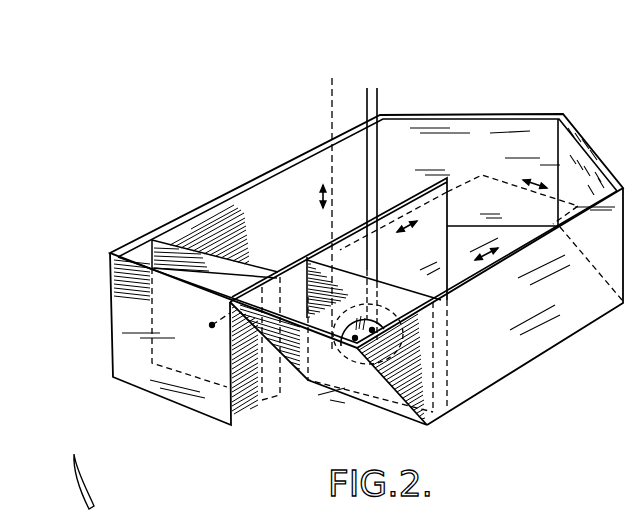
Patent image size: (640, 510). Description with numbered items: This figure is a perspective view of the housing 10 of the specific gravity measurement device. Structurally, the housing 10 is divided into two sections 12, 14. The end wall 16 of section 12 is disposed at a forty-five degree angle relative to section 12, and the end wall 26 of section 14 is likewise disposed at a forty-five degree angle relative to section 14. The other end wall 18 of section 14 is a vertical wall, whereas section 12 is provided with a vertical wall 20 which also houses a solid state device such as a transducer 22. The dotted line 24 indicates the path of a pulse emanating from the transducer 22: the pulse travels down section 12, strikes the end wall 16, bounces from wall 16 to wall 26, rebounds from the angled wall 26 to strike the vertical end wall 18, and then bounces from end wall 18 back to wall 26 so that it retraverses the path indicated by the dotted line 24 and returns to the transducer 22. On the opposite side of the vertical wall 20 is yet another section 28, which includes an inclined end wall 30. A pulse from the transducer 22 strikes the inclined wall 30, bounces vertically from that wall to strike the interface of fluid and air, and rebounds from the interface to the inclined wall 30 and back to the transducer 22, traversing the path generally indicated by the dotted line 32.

The housing 10 is at (478, 113).
The section 12 is at (424, 260).
The section 14 is at (284, 223).
The end wall 16 is at (578, 165).
The end wall 18 is at (197, 247).
The vertical wall 20 is at (441, 299).
The transducer 22 is at (350, 325).
The dotted line 24 is at (447, 215).
The end wall 26 is at (530, 132).
The section 28 is at (302, 290).
The inclined end wall 30 is at (380, 388).
The dotted line 32 is at (332, 102).